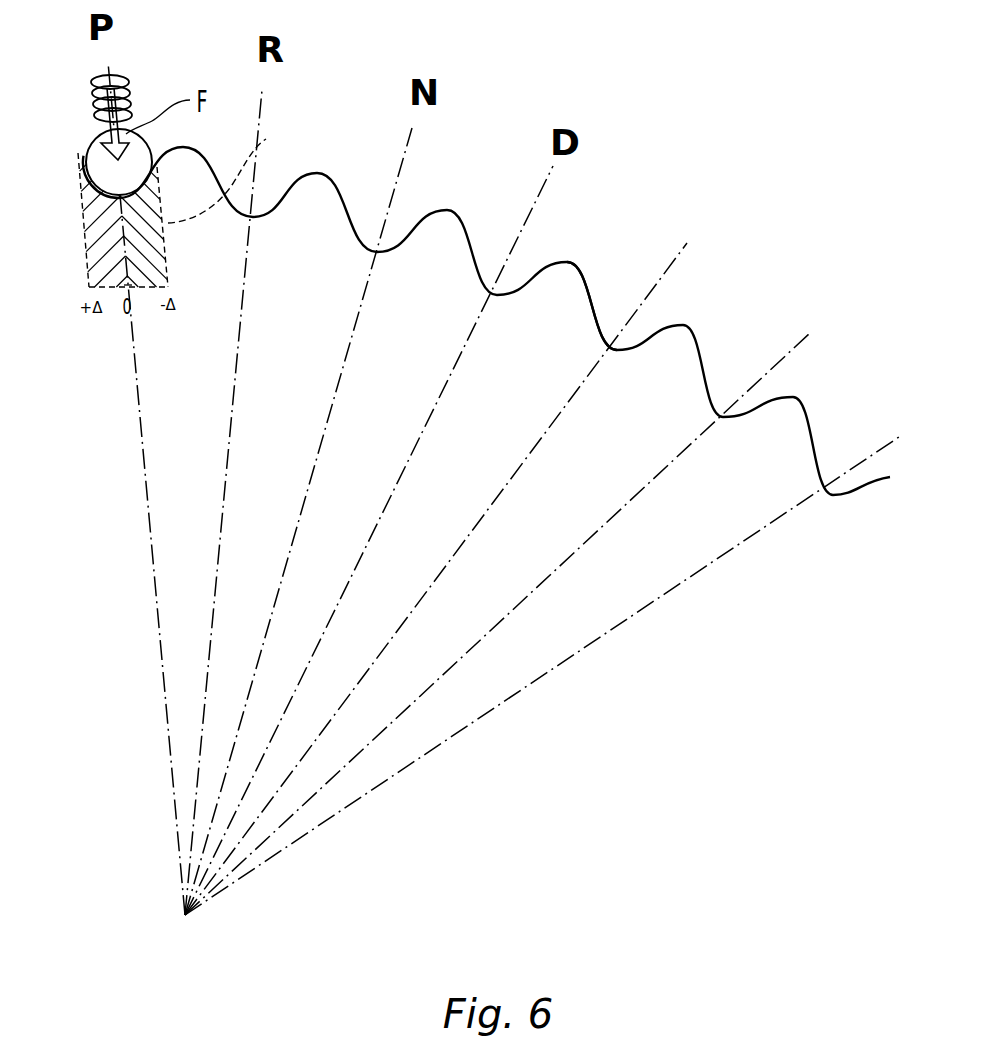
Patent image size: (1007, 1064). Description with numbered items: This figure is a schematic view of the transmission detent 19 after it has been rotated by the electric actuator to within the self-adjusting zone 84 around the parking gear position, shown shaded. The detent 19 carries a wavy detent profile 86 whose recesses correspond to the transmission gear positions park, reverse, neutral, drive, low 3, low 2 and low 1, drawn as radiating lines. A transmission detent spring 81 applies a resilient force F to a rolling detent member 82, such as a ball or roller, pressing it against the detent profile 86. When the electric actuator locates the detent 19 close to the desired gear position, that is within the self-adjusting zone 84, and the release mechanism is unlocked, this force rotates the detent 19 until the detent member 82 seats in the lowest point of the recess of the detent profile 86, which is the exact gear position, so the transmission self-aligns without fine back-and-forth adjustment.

The transmission detent spring 81 is at (128, 98).
The rolling detent member 82 is at (90, 154).
The self-adjusting zone 84 is at (270, 138).
The detent profile 86 is at (461, 212).
The detent 19 is at (593, 278).
The low gear position 1 is at (554, 649).
The low 2 gear position 2 is at (509, 607).
The low 3 gear position 3 is at (446, 559).